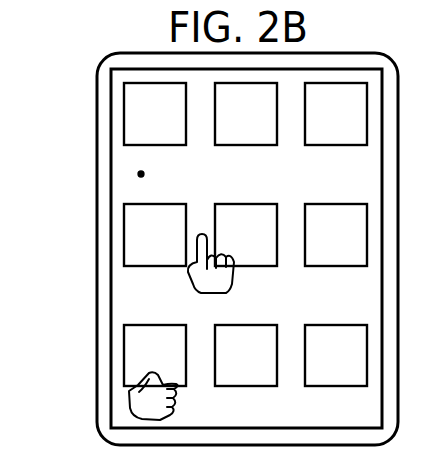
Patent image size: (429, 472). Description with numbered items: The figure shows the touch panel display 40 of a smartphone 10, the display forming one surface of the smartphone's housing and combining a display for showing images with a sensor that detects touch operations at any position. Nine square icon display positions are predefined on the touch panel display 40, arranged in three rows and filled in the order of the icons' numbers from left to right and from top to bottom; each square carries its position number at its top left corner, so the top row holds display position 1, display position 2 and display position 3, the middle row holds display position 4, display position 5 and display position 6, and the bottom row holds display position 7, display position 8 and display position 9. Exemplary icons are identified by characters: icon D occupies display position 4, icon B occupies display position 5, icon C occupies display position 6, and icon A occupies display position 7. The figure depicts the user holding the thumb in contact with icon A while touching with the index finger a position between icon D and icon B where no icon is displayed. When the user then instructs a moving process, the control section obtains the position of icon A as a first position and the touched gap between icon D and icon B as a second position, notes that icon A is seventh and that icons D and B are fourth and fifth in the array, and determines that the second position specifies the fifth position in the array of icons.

The smartphone 10 is at (210, 249).
The touch panel display 40 is at (83, 154).
The display position 1 is at (155, 114).
The display position 2 is at (246, 114).
The display position 3 is at (336, 114).
The display position 4 is at (155, 235).
The display position 5 is at (246, 235).
The display position 6 is at (336, 235).
The display position 7 is at (155, 355).
The display position 8 is at (246, 355).
The display position 9 is at (336, 355).